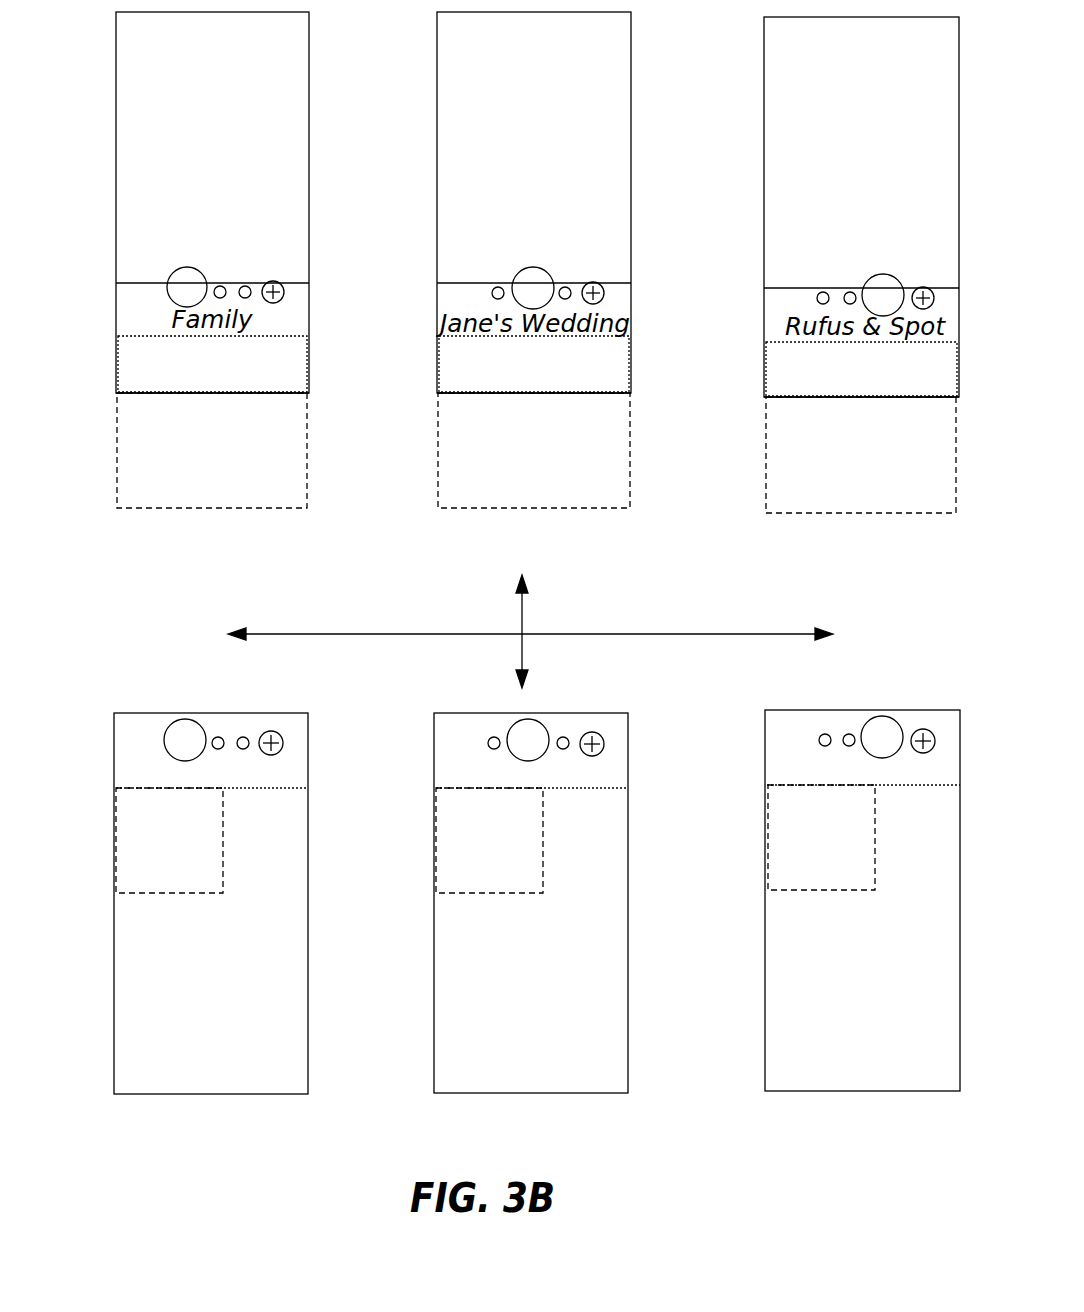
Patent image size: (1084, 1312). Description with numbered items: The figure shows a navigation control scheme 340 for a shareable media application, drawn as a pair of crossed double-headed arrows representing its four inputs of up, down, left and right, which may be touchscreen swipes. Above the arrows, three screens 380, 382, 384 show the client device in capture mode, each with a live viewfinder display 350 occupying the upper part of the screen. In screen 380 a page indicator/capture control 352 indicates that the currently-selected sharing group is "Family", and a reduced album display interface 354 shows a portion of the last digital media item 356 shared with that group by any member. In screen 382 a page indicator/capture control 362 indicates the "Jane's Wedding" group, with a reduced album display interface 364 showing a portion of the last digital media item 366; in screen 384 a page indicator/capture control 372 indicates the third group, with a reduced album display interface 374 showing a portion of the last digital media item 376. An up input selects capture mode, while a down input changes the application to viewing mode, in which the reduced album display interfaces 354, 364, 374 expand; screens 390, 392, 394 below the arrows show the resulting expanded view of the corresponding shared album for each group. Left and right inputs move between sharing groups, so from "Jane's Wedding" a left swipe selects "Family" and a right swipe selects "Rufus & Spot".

The navigation control scheme 340 is at (610, 633).
The live viewfinder display 350 is at (124, 66).
The page indicator/capture control 352 is at (183, 280).
The reduced album display interface 354 is at (125, 357).
The last digital media item 356 is at (152, 463).
The page indicator/capture control 362 is at (525, 283).
The reduced album display interface 364 is at (445, 357).
The last digital media item 366 is at (473, 463).
The page indicator/capture control 372 is at (866, 284).
The reduced album display interface 374 is at (773, 363).
The last digital media item 376 is at (800, 468).
The screen 380 is at (268, 396).
The screen 382 is at (588, 396).
The screen 384 is at (928, 400).
The screen 390 is at (266, 1096).
The screen 392 is at (585, 1094).
The screen 394 is at (925, 1092).